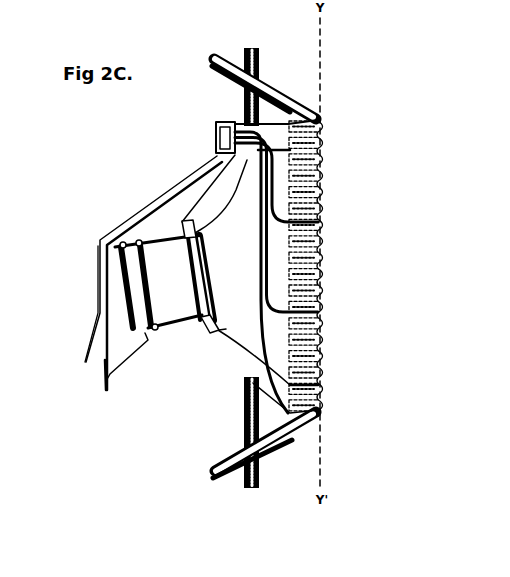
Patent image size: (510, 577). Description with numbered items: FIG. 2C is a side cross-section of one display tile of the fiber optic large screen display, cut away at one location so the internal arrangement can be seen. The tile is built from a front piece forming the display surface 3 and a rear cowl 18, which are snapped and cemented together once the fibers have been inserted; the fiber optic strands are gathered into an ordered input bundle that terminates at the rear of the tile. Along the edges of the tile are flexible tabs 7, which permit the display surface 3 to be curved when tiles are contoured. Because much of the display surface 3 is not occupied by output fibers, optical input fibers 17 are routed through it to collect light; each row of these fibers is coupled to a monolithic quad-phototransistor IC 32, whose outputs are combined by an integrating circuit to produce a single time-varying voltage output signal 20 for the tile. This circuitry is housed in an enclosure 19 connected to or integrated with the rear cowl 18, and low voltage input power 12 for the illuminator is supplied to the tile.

The display surface 3 is at (322, 355).
The tabs 7 is at (305, 102).
The low voltage input power to the illuminator 12 is at (103, 382).
The optical input fibers 17 is at (321, 151).
The rear cowl 18 is at (231, 182).
The enclosure 19 is at (214, 150).
The time-varying voltage output signal 20 is at (91, 321).
The monolithic quad-phototransistor IC 32 is at (217, 128).